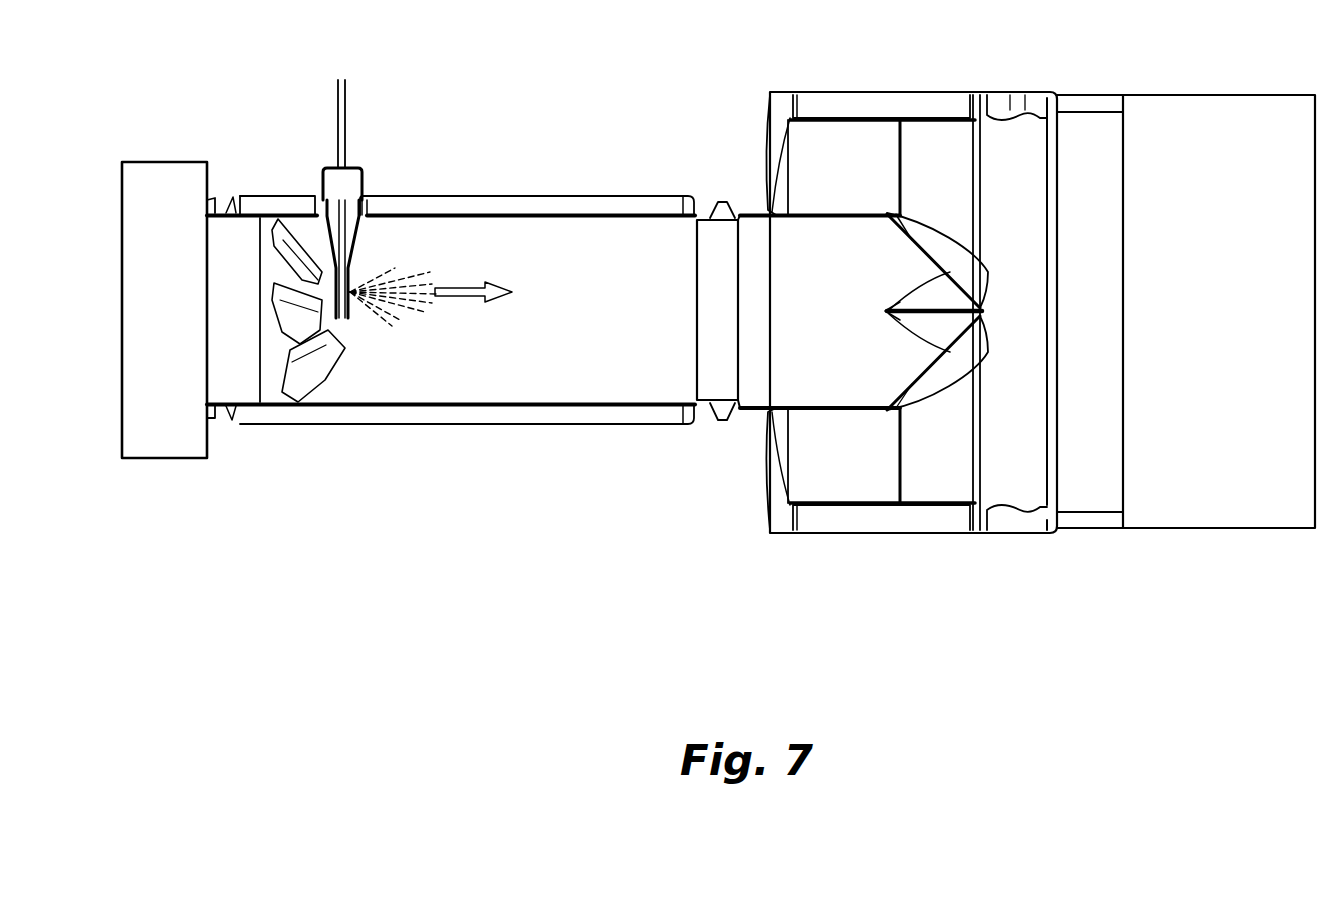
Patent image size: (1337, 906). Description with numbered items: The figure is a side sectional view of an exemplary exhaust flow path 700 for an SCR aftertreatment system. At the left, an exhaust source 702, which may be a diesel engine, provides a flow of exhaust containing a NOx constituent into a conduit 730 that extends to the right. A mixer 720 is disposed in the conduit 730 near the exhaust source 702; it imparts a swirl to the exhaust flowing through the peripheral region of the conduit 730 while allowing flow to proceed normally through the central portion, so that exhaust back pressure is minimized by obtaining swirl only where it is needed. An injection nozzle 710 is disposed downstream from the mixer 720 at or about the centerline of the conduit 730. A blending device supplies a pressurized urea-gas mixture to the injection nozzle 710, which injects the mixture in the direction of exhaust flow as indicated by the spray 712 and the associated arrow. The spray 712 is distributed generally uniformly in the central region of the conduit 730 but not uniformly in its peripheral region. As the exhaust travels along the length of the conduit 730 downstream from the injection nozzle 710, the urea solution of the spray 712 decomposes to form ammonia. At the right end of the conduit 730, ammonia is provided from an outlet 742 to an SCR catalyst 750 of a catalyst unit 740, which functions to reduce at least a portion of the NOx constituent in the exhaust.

The exhaust flow path 700 is at (337, 598).
The exhaust source 702 is at (183, 335).
The injection nozzle 710 is at (357, 240).
The spray 712 is at (403, 272).
The mixer 720 is at (282, 394).
The conduit 730 is at (581, 430).
The catalyst unit 740 is at (917, 570).
The outlet 742 is at (938, 245).
The SCR catalyst 750 is at (1232, 480).